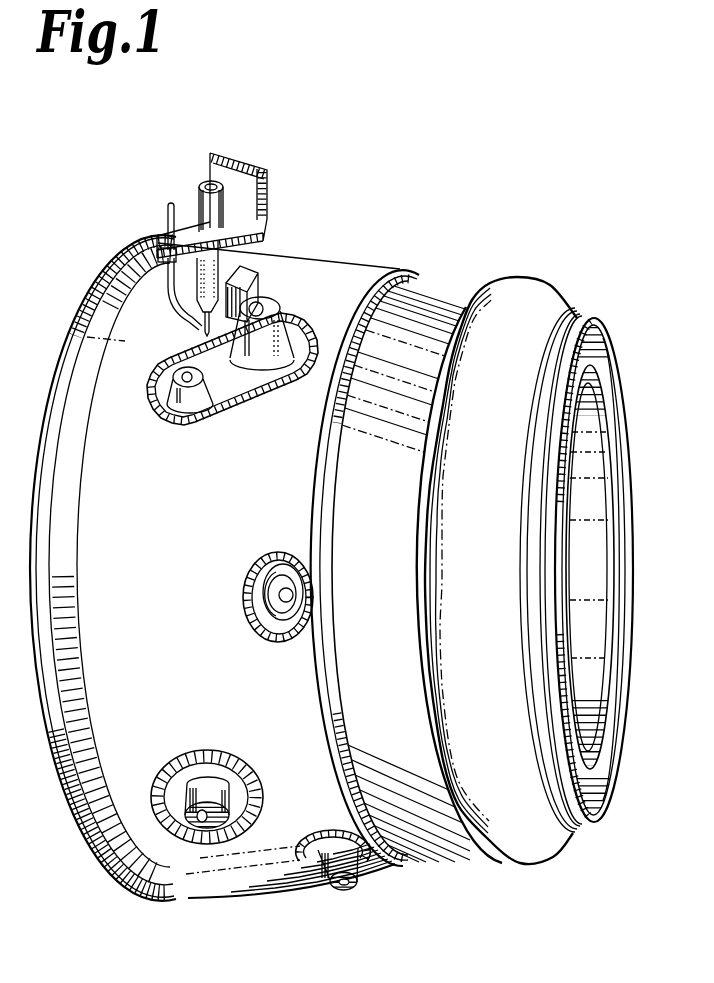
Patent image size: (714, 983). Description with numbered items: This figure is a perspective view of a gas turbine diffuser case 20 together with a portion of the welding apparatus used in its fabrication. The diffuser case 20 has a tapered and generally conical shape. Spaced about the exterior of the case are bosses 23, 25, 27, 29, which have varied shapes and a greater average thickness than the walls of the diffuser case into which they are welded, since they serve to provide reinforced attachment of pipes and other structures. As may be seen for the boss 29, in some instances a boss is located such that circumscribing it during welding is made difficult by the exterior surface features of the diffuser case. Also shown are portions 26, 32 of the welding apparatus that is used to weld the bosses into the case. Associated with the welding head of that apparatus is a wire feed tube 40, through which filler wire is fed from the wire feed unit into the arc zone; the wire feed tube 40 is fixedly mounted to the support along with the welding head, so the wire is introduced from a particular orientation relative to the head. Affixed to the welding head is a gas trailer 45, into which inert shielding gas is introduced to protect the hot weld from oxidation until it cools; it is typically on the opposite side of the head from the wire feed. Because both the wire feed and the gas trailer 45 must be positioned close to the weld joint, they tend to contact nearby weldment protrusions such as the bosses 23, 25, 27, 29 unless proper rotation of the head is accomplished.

The diffuser case 20 is at (566, 233).
The boss 23 is at (185, 700).
The boss 25 is at (307, 860).
The portion of the welding apparatus 26 is at (267, 187).
The boss 27 is at (157, 430).
The boss 29 is at (243, 590).
The portion of the welding apparatus 32 is at (200, 197).
The wire feed tube 40 is at (166, 313).
The gas trailer 45 is at (244, 266).